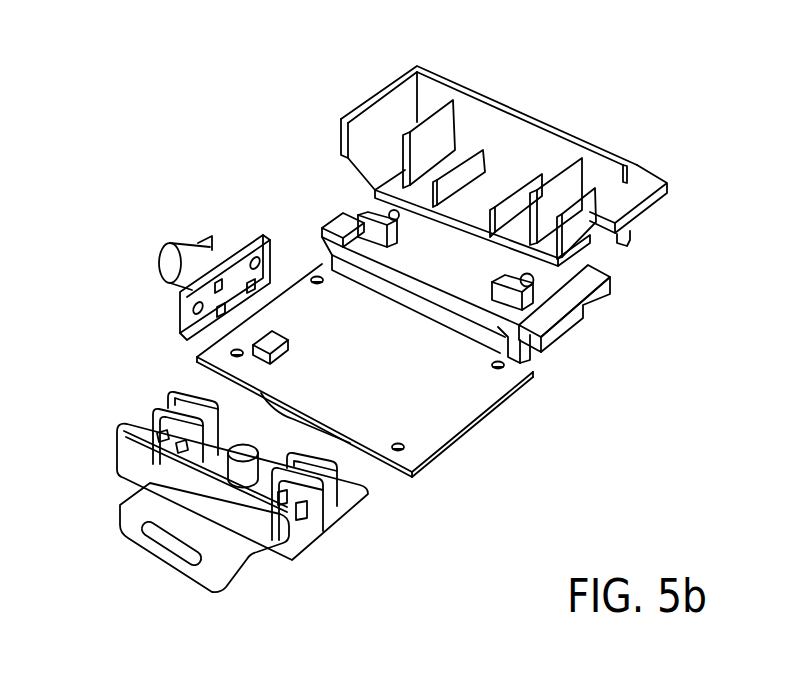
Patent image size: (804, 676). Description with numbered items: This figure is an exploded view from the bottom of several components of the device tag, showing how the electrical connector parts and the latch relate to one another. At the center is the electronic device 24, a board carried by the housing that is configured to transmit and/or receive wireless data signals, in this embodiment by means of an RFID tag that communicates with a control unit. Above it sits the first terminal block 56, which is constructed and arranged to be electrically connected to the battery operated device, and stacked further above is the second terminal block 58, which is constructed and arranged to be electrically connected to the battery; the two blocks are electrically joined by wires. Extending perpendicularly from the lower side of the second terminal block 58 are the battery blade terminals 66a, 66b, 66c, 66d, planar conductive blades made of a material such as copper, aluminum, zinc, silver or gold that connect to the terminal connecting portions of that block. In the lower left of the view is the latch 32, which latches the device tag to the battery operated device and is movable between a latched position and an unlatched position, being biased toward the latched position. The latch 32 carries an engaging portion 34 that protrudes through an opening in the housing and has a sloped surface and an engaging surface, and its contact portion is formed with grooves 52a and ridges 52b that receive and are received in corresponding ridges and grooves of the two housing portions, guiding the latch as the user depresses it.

The electronic device 24 is at (489, 418).
The latch 32 is at (338, 545).
The engaging portion 34 is at (212, 581).
The grooves 52a is at (148, 427).
The ridges 52b is at (150, 420).
The first terminal block 56 is at (583, 337).
The second terminal block 58 is at (667, 172).
The battery blade terminal 66a is at (595, 190).
The battery blade terminal 66b is at (570, 192).
The battery blade terminal 66c is at (490, 160).
The battery blade terminal 66d is at (445, 123).